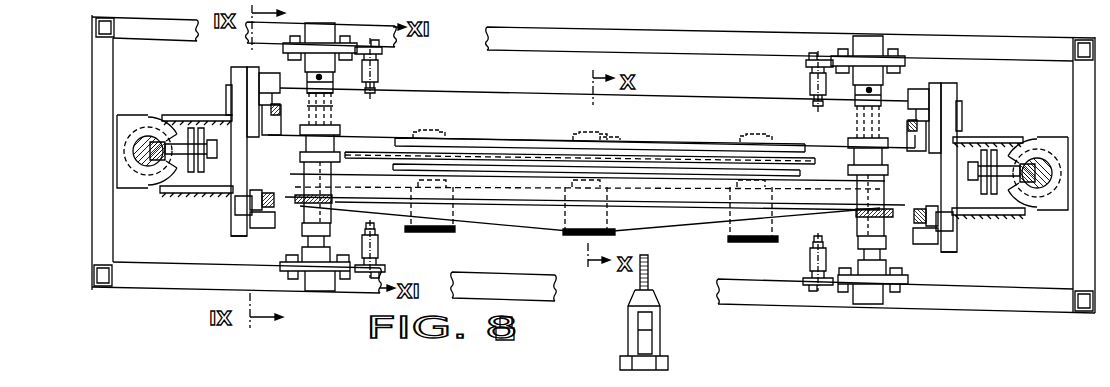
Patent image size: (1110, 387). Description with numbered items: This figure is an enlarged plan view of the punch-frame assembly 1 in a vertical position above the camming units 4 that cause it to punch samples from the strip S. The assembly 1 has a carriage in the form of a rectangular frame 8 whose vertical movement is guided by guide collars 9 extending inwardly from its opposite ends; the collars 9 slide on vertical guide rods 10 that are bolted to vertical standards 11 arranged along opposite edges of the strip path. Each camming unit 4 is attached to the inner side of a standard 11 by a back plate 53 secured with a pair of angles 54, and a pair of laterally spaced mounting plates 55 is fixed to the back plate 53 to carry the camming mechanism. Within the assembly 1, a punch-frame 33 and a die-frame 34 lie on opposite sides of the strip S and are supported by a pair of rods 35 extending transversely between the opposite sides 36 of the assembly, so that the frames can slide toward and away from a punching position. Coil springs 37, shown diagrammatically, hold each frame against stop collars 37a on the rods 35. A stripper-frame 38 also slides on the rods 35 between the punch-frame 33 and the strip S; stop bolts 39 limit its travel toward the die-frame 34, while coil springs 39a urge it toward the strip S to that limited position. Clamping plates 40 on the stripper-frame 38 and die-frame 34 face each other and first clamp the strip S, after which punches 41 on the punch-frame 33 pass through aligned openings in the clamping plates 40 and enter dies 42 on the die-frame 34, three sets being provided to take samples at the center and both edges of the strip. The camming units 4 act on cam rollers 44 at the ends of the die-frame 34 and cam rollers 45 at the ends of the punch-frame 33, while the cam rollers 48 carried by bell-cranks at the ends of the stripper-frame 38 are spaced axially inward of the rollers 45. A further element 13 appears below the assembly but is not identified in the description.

The punch-frame assembly 1 is at (1103, 96).
The camming unit 4 is at (231, 236).
The rectangular frame 8 is at (92, 73).
The guide collar 9 is at (140, 116).
The vertical guide rod 10 is at (147, 185).
The vertical standard 11 is at (176, 115).
The clevis 13 is at (655, 276).
The punch-frame 33 is at (503, 226).
The die-frame 34 is at (502, 93).
The rod 35 is at (308, 144).
The side 36 is at (712, 54).
The coil spring 37 is at (378, 62).
The stop collar 37a is at (334, 84).
The stripper-frame 38 is at (559, 229).
The stop bolt 39 is at (326, 196).
The coil spring 39a is at (340, 168).
The clamping plate 40 is at (488, 160).
The punch 41 is at (456, 194).
The die 42 is at (425, 131).
The cam roller 44 is at (268, 94).
The cam roller 45 is at (237, 208).
The cam roller 48 is at (259, 226).
The back plate 53 is at (238, 68).
The angle 54 is at (228, 98).
The mounting plate 55 is at (240, 80).
The strip S is at (664, 157).